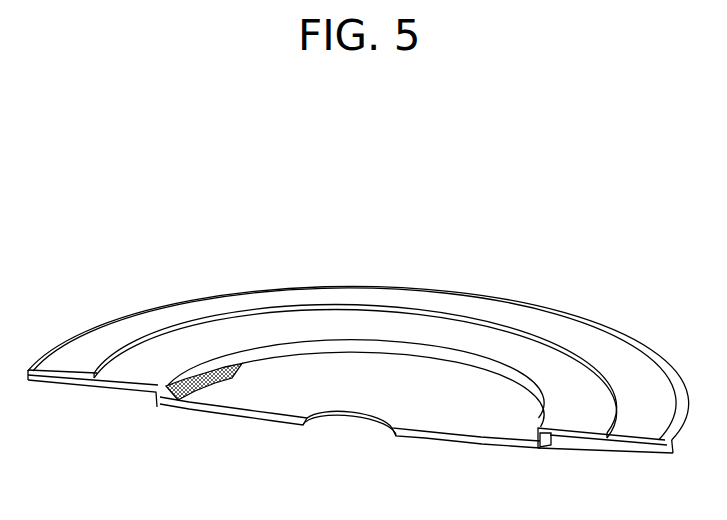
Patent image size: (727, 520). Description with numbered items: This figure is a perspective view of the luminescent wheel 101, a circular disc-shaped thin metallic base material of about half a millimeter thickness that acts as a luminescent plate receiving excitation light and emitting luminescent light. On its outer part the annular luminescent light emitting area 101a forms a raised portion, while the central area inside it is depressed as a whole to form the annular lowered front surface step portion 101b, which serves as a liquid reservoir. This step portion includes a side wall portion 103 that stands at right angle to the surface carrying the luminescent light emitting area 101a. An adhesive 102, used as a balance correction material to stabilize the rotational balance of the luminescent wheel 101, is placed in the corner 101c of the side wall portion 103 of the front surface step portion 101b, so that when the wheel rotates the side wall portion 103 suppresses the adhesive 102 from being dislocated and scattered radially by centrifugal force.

The luminescent wheel 101 is at (358, 355).
The luminescent light emitting area 101a is at (148, 319).
The front surface step portion 101b is at (322, 380).
The corner 101c is at (538, 436).
The adhesive 102 is at (168, 402).
The side wall portion 103 is at (403, 348).